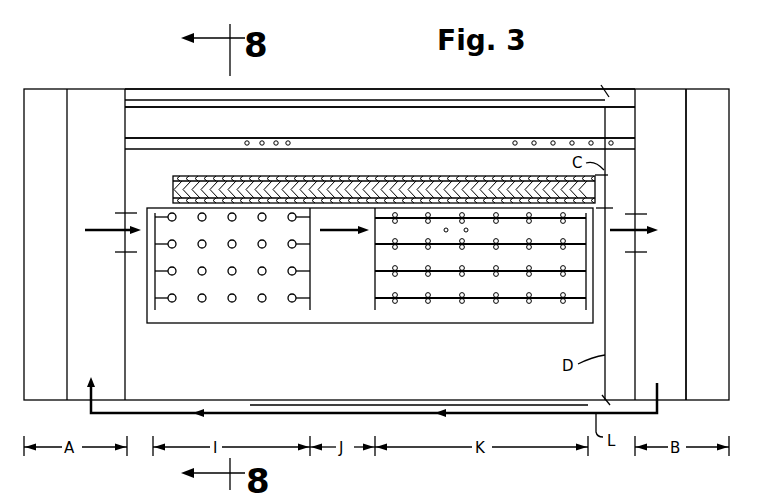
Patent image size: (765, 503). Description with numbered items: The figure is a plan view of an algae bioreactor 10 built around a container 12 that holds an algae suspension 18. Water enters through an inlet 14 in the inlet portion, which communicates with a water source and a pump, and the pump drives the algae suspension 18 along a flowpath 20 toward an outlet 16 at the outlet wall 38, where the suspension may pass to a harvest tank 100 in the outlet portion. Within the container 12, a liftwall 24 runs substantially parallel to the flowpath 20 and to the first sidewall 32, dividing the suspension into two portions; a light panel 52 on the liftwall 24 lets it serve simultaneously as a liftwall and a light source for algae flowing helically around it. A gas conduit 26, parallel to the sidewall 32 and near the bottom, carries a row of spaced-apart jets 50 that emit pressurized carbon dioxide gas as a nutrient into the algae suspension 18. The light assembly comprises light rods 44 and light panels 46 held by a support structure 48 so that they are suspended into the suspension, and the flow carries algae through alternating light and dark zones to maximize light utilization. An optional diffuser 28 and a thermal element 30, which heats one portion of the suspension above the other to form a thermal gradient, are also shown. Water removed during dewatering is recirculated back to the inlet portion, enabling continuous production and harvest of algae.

The algae bioreactor 10 is at (104, 62).
The container 12 is at (566, 75).
The inlet 14 is at (112, 222).
The outlet 16 is at (640, 255).
The algae suspension 18 is at (370, 288).
The flowpath 20 is at (117, 230).
The liftwall 24 is at (481, 190).
The gas conduit 26 is at (318, 143).
The diffuser 28 is at (187, 323).
The thermal element 30 is at (352, 100).
The first sidewall 32 is at (170, 89).
The outlet wall 38 is at (635, 353).
The light rods 44 is at (291, 303).
The light panels 46 is at (445, 302).
The support structure 48 is at (375, 312).
The jets 50 is at (288, 140).
The light panel 52 is at (172, 201).
The harvest tank 100 is at (666, 100).